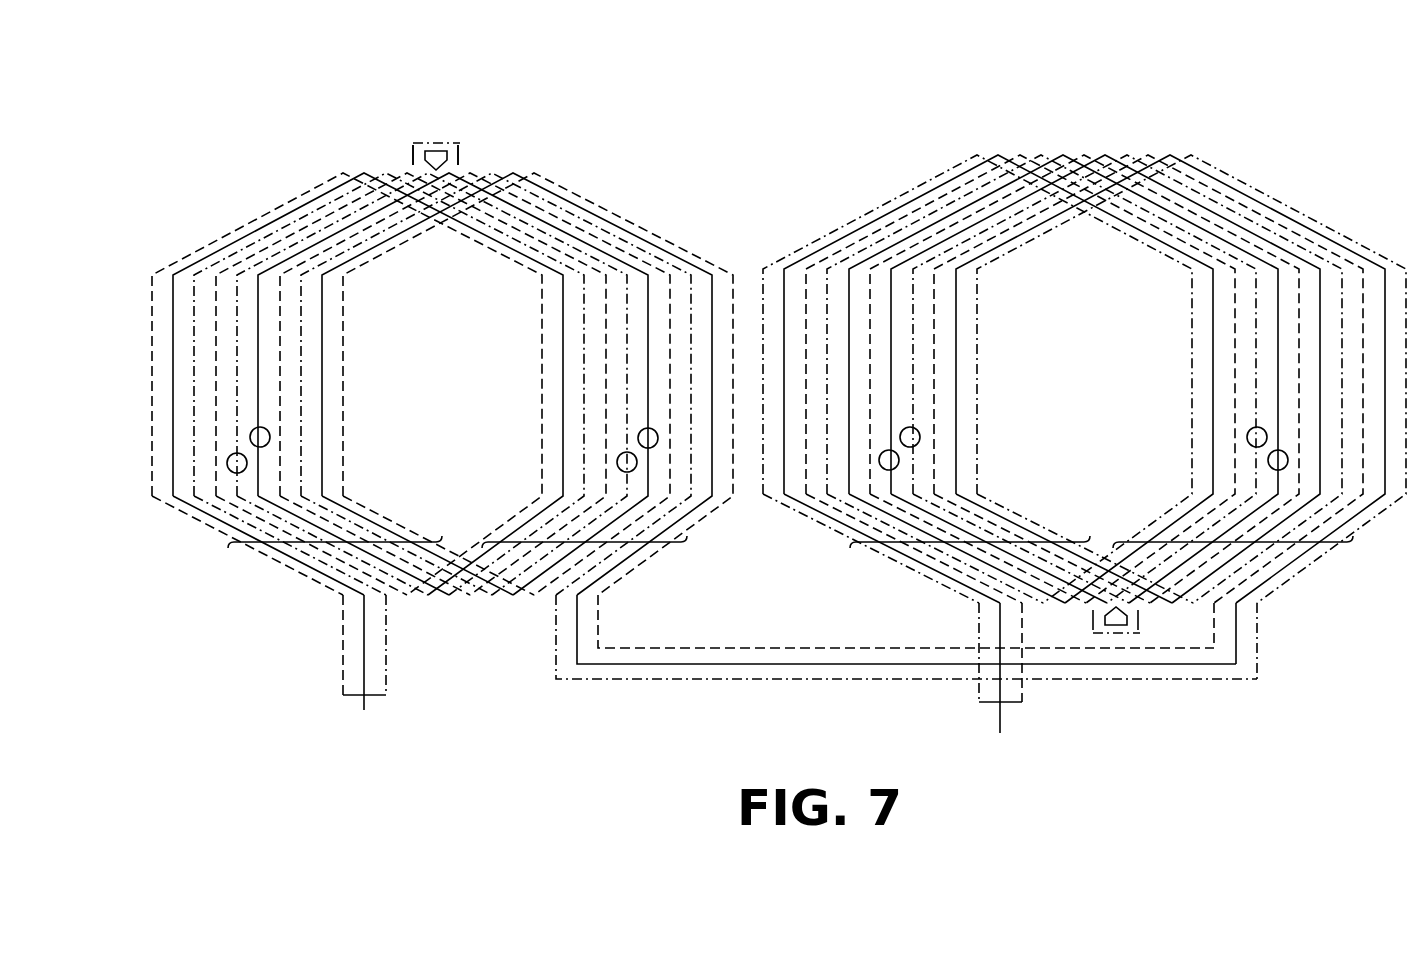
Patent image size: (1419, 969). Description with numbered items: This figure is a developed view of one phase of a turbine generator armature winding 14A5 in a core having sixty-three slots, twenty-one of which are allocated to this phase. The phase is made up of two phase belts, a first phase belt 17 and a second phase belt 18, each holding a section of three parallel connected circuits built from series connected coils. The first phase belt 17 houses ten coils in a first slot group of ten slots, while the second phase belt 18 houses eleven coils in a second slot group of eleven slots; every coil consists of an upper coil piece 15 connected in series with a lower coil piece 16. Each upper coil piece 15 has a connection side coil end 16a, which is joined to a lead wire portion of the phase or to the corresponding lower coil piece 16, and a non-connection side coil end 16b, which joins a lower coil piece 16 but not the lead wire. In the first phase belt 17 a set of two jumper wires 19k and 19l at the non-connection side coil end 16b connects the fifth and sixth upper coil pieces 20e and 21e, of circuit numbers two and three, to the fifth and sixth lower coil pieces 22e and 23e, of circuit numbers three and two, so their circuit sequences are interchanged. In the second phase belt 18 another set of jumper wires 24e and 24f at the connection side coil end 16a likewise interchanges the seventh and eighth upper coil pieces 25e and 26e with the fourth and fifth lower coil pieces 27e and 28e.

The armature winding (phase) 14A5 is at (772, 255).
The first phase belt 17 is at (203, 236).
The second phase belt 18 is at (1228, 147).
The upper coil piece 15 is at (337, 545).
The lower coil piece 16 is at (585, 545).
The connection side coil end 16a is at (336, 651).
The non-connection side coil end 16b is at (398, 145).
The jumper wire 19k is at (450, 152).
The jumper wire 19l is at (446, 130).
The fifth upper coil piece 20e is at (276, 255).
The sixth upper coil piece 21e is at (333, 233).
The fifth lower coil piece 22e is at (553, 203).
The sixth lower coil piece 23e is at (585, 238).
The jumper wire 24e is at (1092, 620).
The jumper wire 24f is at (1139, 620).
The seventh upper coil piece 25e is at (948, 522).
The eighth upper coil piece 26e is at (990, 535).
The fourth lower coil piece 27e is at (1262, 366).
The fifth lower coil piece 28e is at (1282, 367).